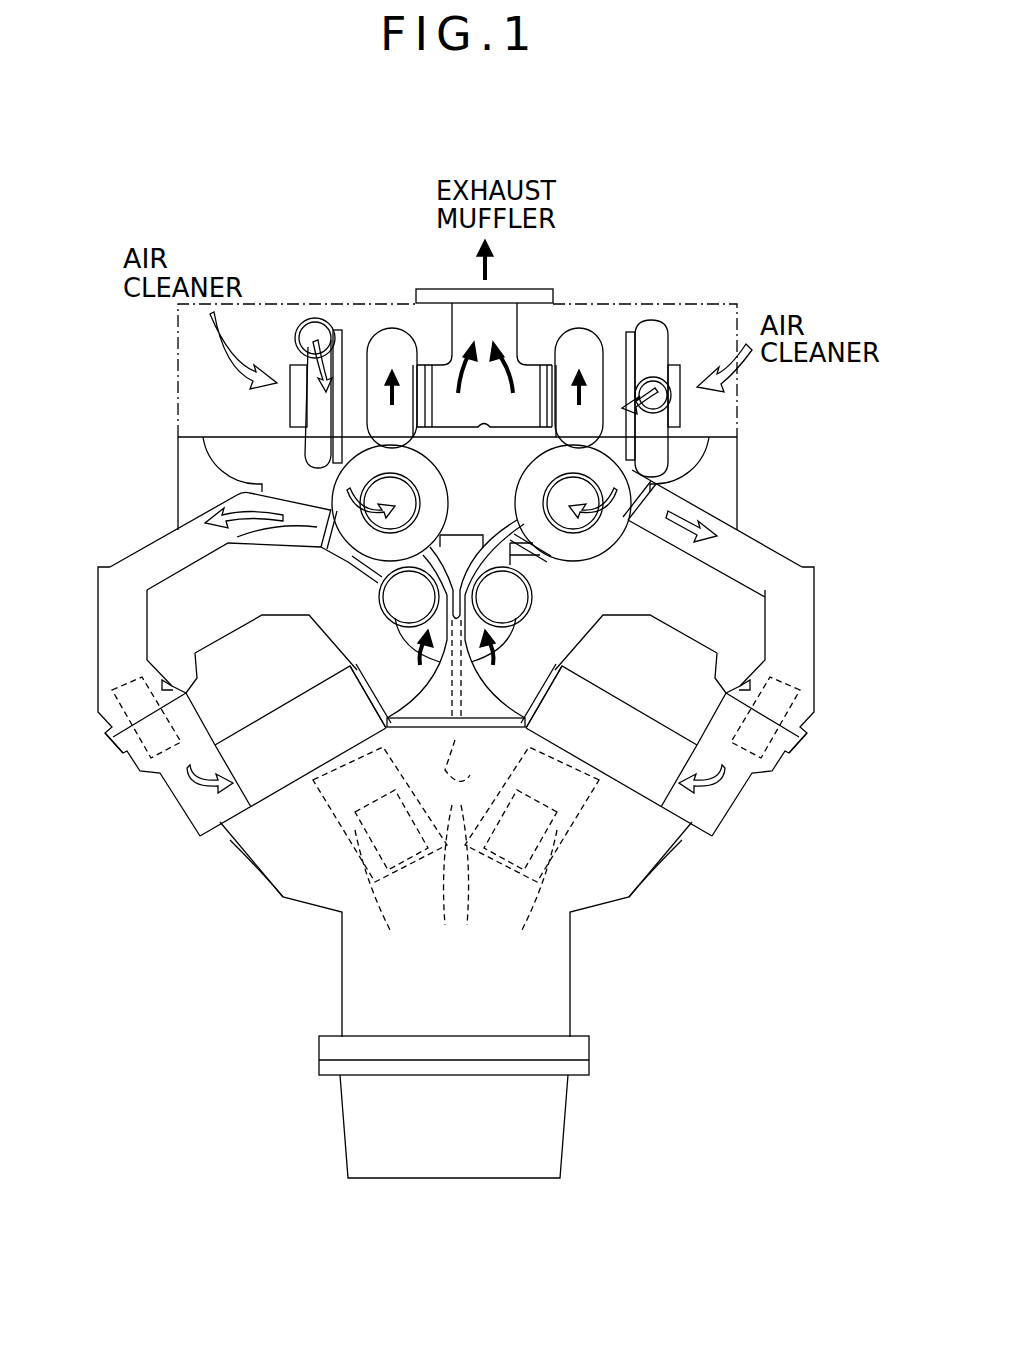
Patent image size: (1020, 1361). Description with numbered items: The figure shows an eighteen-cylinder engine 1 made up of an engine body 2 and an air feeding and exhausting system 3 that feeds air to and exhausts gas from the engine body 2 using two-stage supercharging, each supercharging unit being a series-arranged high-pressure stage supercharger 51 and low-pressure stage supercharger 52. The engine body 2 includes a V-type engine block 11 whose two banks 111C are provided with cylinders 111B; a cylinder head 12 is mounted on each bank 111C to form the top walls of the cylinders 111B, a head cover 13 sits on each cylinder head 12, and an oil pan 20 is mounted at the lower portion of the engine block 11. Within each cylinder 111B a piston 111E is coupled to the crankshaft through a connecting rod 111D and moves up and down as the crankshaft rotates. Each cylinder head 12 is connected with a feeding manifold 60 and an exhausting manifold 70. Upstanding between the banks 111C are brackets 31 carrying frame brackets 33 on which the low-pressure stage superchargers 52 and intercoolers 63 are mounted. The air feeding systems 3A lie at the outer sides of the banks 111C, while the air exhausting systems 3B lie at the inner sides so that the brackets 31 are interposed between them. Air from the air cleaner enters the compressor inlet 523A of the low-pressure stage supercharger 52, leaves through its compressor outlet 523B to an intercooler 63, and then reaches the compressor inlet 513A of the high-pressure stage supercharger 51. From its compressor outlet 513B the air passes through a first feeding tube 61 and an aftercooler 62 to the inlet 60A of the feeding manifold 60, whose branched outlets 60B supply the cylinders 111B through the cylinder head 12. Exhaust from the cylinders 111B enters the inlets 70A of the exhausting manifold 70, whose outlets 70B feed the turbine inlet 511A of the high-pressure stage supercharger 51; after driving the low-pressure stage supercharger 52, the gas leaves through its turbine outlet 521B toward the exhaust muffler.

The engine 1 is at (140, 352).
The engine body 2 is at (185, 972).
The air feeding and exhausting system 3 is at (150, 443).
The air feeding system 3A is at (118, 533).
The air exhausting system 3B is at (388, 245).
The engine block 11 is at (277, 878).
The cylinder head 12 is at (277, 777).
The head cover 13 is at (197, 662).
The oil pan 20 is at (388, 1165).
The bracket 31 is at (440, 683).
The frame bracket 33 is at (722, 473).
The high-pressure stage supercharger 51 is at (300, 478).
The low-pressure stage supercharger 52 is at (326, 284).
The feeding manifold 60 is at (190, 800).
The inlet of feeding manifold 60A is at (107, 728).
The outlet of feeding manifold 60B is at (235, 777).
The first feeding tube 61 is at (120, 635).
The aftercooler 62 is at (180, 691).
The intercooler 63 is at (667, 304).
The exhausting manifold 70 is at (400, 615).
The inlet of exhausting manifold 70A is at (372, 690).
The outlet of exhausting manifold 70B is at (353, 573).
The cylinder 111B is at (456, 811).
The bank 111C is at (240, 840).
The connecting rod 111D is at (458, 887).
The piston 111E is at (458, 897).
The turbine inlet 511A is at (372, 590).
The compressor inlet 513A is at (545, 470).
The compressor outlet 513B is at (253, 532).
The turbine outlet 521B is at (435, 383).
The compressor inlet 523A is at (290, 368).
The compressor outlet 523B is at (336, 325).